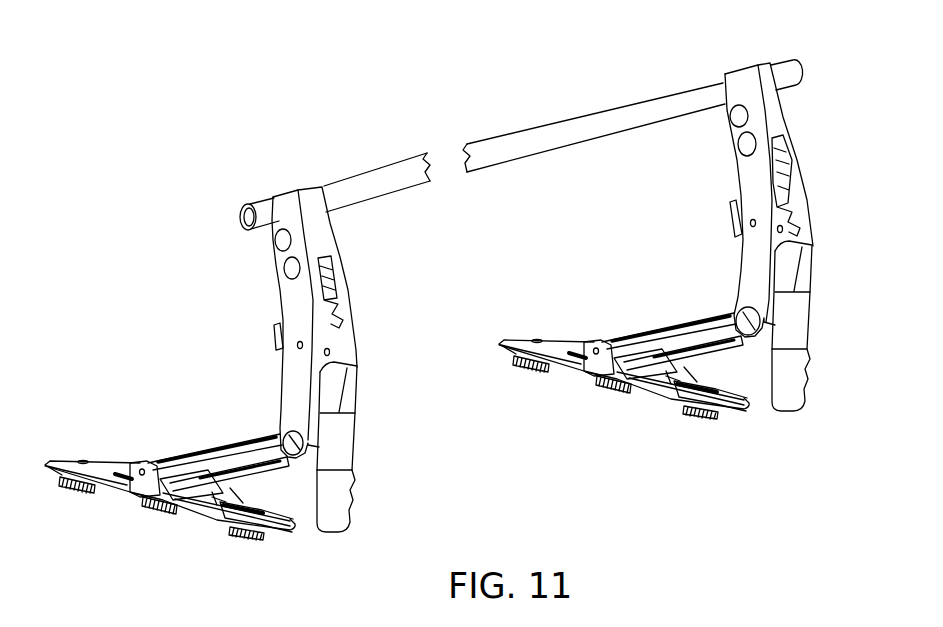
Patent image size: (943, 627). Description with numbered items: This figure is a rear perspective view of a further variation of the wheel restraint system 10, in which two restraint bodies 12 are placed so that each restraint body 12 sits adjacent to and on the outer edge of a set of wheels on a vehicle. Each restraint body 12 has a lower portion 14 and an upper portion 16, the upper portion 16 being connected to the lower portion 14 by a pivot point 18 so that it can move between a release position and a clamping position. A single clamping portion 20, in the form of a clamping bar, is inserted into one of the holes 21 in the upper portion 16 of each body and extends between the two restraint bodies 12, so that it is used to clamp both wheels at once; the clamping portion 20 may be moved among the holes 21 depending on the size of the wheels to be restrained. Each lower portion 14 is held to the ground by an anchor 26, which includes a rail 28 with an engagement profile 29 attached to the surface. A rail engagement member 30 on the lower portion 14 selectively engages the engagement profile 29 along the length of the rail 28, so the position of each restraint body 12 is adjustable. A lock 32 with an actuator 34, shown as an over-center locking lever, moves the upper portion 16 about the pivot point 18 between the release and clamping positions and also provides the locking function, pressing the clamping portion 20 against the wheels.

The wheel restraint system 10 is at (282, 143).
The restraint body 12 is at (294, 192).
The lower portion 14 is at (193, 452).
The upper portion 16 is at (288, 303).
The pivot point 18 is at (285, 435).
The clamping portion 20 is at (528, 137).
The holes 21 is at (292, 267).
The anchor 26 is at (70, 495).
The rail 28 is at (48, 462).
The engagement profile 29 is at (127, 477).
The rail engagement member 30 is at (132, 495).
The lock 32 is at (347, 395).
The actuator 34 is at (343, 480).